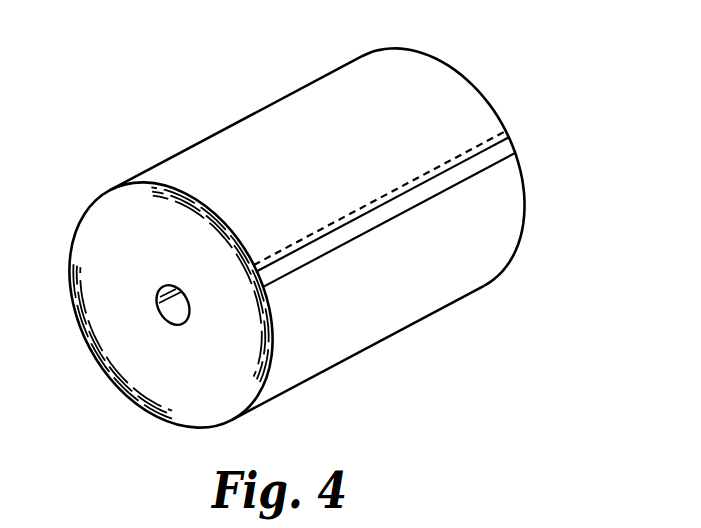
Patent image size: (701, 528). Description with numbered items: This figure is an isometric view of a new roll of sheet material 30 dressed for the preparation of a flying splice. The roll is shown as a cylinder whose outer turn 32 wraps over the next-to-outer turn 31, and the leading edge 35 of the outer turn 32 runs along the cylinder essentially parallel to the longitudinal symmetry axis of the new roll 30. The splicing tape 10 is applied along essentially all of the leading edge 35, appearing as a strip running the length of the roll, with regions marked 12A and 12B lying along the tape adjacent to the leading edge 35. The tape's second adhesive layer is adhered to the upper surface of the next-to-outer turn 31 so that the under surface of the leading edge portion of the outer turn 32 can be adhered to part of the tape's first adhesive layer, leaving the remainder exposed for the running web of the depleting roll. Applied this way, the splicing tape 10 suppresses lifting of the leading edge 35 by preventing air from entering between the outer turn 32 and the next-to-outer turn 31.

The splicing tape 10 is at (487, 140).
The first end of strip 12A is at (502, 147).
The second end of strip 12B is at (422, 183).
The new roll of sheet material 30 is at (148, 100).
The next-to-outer turn 31 is at (495, 220).
The outer turn 32 is at (355, 75).
The leading edge 35 is at (347, 227).